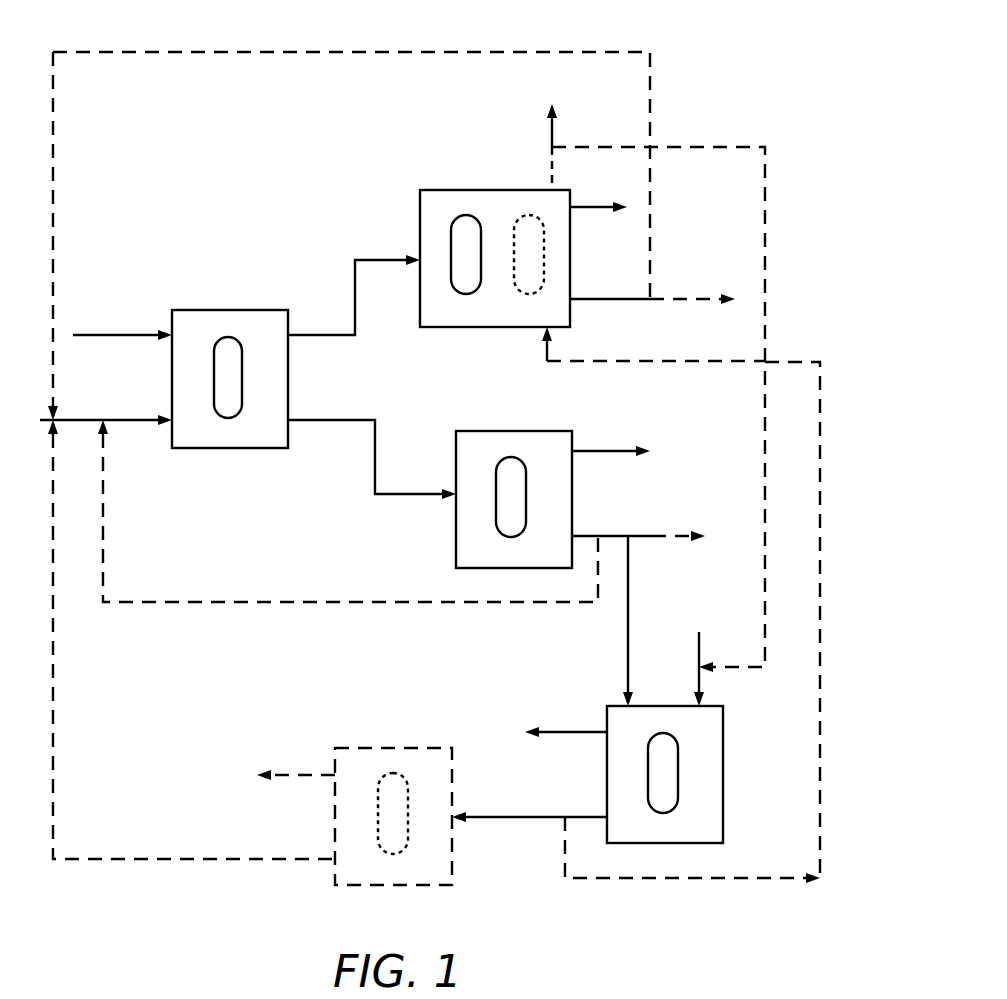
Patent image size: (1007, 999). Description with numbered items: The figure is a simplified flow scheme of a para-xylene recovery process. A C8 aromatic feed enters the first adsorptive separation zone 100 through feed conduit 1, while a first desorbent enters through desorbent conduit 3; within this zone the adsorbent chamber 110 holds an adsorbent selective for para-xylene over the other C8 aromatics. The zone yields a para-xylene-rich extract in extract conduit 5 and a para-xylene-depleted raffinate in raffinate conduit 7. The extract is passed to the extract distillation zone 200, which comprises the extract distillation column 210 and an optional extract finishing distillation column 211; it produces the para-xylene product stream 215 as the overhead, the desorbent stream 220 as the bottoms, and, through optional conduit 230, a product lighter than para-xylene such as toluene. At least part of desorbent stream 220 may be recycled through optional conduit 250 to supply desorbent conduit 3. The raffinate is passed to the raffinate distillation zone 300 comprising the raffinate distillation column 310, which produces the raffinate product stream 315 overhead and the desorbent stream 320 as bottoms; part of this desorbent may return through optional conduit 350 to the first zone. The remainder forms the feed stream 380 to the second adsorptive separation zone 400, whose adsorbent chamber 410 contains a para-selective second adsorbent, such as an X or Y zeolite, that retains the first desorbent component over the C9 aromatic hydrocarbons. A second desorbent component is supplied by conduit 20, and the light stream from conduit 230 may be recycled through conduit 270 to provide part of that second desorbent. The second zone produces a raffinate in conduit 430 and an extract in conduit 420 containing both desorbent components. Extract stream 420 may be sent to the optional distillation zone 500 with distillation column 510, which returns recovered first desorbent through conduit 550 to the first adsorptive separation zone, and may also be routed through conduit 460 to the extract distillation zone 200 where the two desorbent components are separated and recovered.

The feed conduit 1 is at (113, 334).
The desorbent conduit 3 is at (122, 419).
The extract conduit 5 is at (376, 258).
The raffinate conduit 7 is at (382, 496).
The second desorbent conduit 20 is at (700, 646).
The adsorptive separation zone 100 is at (272, 310).
The adsorbent chamber 110 is at (230, 323).
The extract distillation zone 200 is at (424, 190).
The extract distillation column 210 is at (466, 201).
The extract finishing distillation column 211 is at (529, 201).
The para-xylene product stream 215 is at (598, 208).
The desorbent stream 220 is at (584, 300).
The light product conduit 230 is at (553, 178).
The recycle conduit 250 is at (292, 53).
The recycle conduit 270 is at (710, 147).
The raffinate distillation zone 300 is at (560, 431).
The raffinate distillation column 310 is at (513, 443).
The raffinate product stream 315 is at (584, 452).
The desorbent stream 320 is at (584, 535).
The recycle conduit 350 is at (104, 518).
The feed stream 380 is at (627, 639).
The second adsorptive separation zone 400 is at (724, 730).
The adsorbent chamber 410 is at (663, 719).
The extract conduit 420 is at (581, 816).
The raffinate conduit 430 is at (591, 731).
The conduit 460 is at (794, 362).
The distillation zone 500 is at (436, 748).
The distillation column 510 is at (393, 759).
The desorbent conduit 550 is at (54, 633).